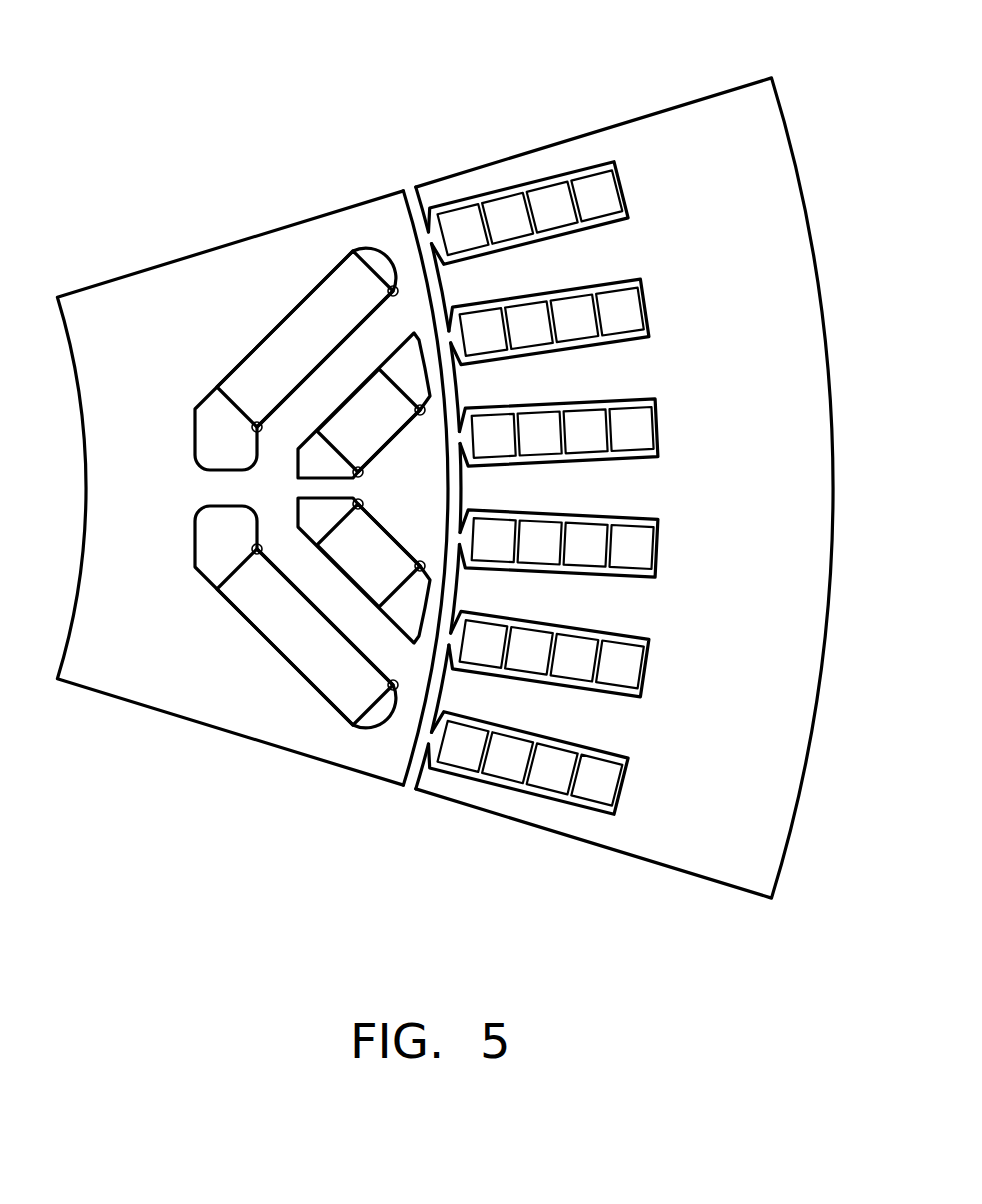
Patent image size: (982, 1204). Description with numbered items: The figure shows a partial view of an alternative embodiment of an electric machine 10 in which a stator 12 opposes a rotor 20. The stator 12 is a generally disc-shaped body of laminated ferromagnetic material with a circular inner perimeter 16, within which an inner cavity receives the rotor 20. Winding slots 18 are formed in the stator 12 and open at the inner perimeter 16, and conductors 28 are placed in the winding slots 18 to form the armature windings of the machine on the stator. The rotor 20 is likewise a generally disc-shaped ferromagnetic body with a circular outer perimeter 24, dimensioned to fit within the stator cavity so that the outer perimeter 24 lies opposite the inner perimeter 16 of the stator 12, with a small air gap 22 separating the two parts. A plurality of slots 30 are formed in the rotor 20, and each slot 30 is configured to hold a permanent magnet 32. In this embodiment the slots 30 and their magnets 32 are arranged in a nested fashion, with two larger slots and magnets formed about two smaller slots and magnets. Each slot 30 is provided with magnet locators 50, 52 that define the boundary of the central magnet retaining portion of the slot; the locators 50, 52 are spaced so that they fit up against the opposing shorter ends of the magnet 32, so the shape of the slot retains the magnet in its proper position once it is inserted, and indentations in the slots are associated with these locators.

The electric machine 10 is at (404, 157).
The stator 12 is at (775, 255).
The inner perimeter 16 is at (427, 757).
The winding slots 18 is at (625, 180).
The rotor 20 is at (247, 257).
The air gap 22 is at (415, 763).
The outer perimeter 24 is at (413, 760).
The conductors 28 is at (501, 213).
The slots 30 is at (208, 417).
The permanent magnet 32 is at (288, 325).
The magnet locator 50 is at (396, 265).
The magnet locator 52 is at (253, 432).